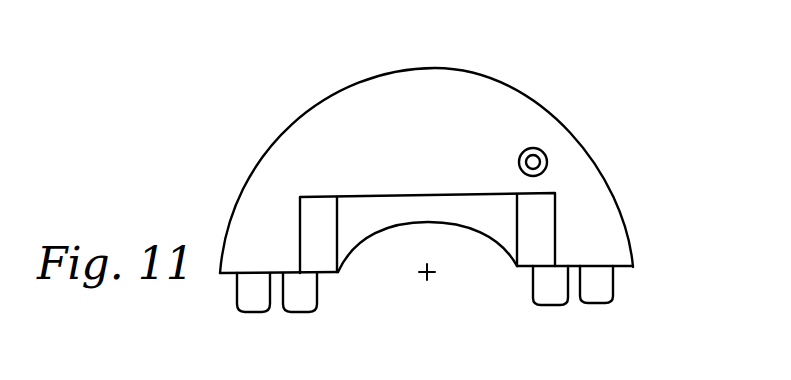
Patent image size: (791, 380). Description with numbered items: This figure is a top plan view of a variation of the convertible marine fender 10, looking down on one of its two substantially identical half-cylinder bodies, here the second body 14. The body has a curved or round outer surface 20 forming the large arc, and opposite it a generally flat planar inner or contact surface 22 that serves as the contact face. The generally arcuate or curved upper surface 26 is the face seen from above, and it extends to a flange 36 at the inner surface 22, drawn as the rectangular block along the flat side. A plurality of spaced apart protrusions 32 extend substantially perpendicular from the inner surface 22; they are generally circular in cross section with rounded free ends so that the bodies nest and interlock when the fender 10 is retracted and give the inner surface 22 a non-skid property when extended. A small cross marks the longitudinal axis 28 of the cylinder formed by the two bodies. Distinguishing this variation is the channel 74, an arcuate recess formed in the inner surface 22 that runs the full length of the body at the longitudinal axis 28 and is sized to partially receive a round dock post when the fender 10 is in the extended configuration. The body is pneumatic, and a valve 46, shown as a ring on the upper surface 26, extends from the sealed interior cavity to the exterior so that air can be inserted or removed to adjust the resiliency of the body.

The convertible marine fender 10 is at (667, 147).
The second body 14 is at (241, 196).
The outer surface 20 is at (513, 83).
The inner surface 22 is at (592, 267).
The upper surface 26 is at (440, 97).
The longitudinal axis 28 is at (430, 277).
The protrusions 32 is at (547, 307).
The flange 36 is at (368, 196).
The valve 46 is at (549, 156).
The channel 74 is at (353, 240).